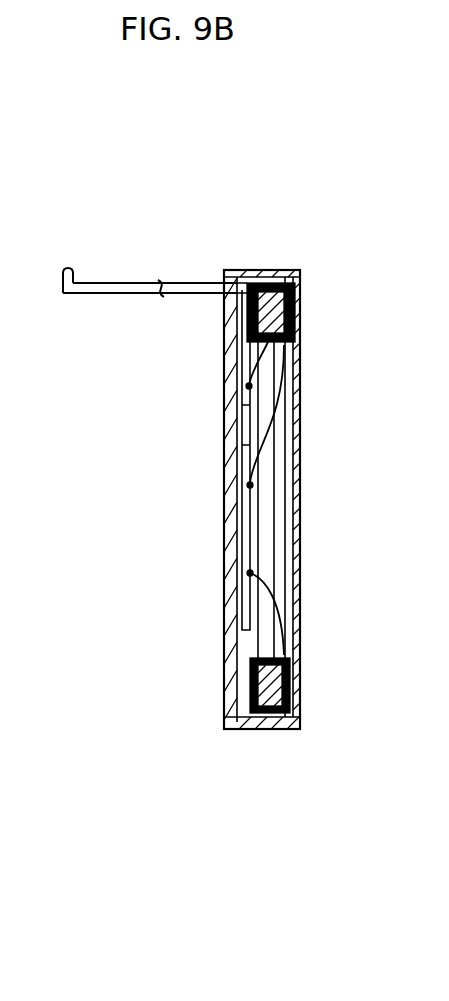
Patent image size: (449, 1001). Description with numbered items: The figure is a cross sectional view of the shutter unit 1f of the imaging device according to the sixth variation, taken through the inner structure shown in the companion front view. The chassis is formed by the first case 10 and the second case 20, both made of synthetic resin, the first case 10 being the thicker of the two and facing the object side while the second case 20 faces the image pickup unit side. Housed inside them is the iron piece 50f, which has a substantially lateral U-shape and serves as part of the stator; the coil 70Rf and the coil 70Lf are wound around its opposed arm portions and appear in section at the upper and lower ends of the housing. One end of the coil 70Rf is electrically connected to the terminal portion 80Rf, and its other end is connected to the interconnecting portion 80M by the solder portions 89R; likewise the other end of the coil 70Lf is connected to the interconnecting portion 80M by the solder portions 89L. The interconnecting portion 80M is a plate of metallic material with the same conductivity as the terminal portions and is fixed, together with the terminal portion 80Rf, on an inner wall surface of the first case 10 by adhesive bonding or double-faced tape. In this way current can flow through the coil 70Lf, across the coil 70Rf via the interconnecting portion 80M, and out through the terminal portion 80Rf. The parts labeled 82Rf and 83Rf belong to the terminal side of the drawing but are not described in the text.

The shutter unit 1f is at (316, 233).
The first case 10 is at (236, 268).
The second case 20 is at (300, 628).
The iron piece 50f is at (272, 640).
The coil 70Rf is at (298, 292).
The coil 70Lf is at (280, 580).
The interconnecting portion 80M is at (248, 505).
The terminal portion 80Rf is at (121, 280).
The right cable plug 82Rf is at (67, 266).
The right cable terminal 83Rf is at (247, 335).
The solder portions 89R is at (248, 386).
The solder portions 89L is at (250, 573).